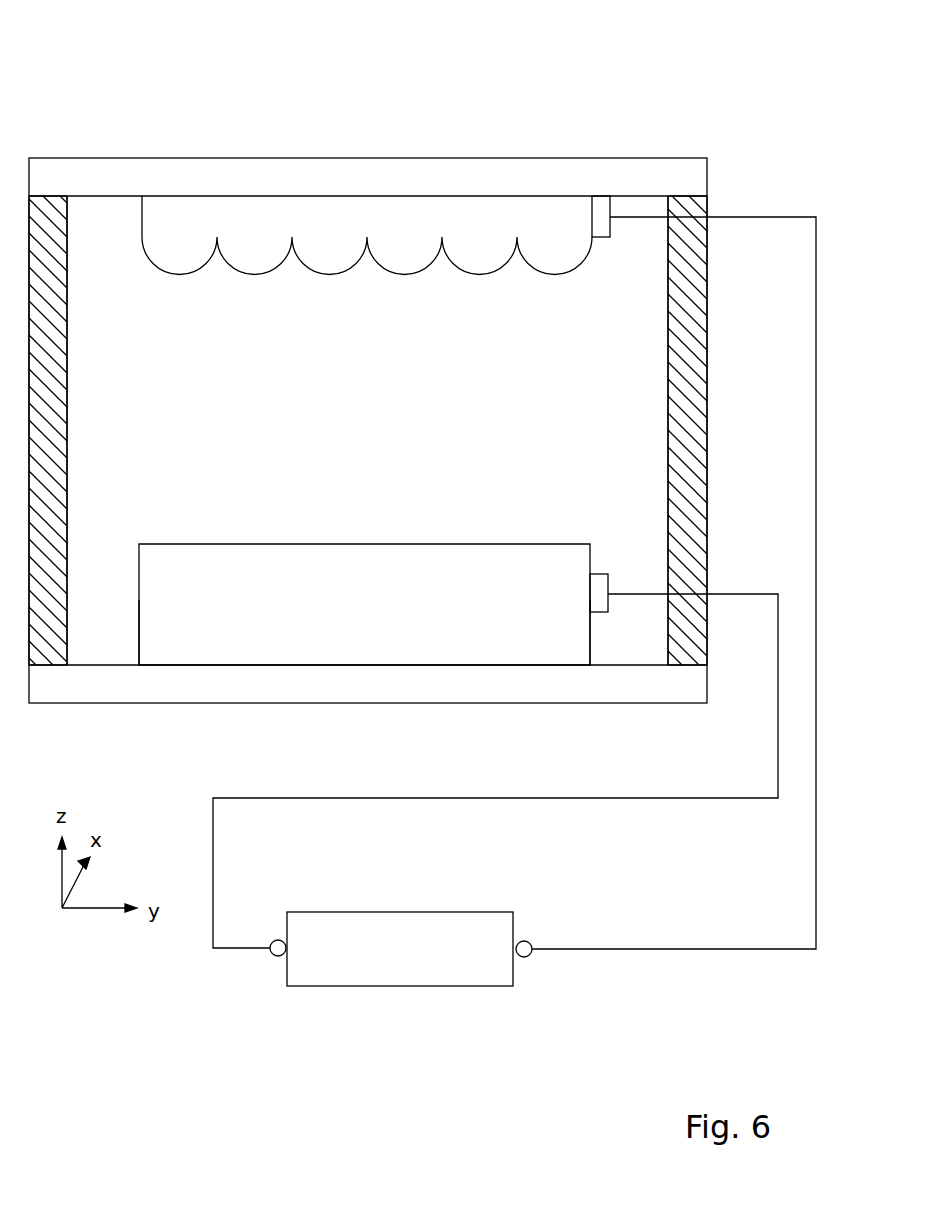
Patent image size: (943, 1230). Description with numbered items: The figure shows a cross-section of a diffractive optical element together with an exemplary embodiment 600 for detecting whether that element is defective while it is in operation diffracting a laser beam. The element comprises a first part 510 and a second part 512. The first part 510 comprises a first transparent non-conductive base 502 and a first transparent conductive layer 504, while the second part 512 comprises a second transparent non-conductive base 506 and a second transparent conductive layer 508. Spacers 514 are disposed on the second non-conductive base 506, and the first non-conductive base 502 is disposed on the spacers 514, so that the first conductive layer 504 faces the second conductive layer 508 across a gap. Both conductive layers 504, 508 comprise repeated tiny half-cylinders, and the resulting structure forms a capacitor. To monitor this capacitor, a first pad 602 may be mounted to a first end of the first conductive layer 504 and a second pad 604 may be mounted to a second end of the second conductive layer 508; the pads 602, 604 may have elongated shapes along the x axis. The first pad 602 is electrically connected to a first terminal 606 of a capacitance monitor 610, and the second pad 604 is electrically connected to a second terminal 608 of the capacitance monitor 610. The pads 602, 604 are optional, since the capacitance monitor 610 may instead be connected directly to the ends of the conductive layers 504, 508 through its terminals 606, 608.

The embodiment for detecting whether DOE is defective 600 is at (128, 50).
The first transparent non-conductive base 502 is at (360, 159).
The first transparent conductive layer 504 is at (367, 235).
The second transparent non-conductive base 506 is at (325, 710).
The second transparent conductive layer 508 is at (364, 624).
The first part 510 is at (522, 144).
The second part 512 is at (286, 527).
The spacers 514 is at (67, 420).
The first pad 602 is at (603, 238).
The second pad 604 is at (598, 574).
The first terminal 606 is at (530, 958).
The second terminal 608 is at (270, 957).
The capacitance monitor 610 is at (483, 912).